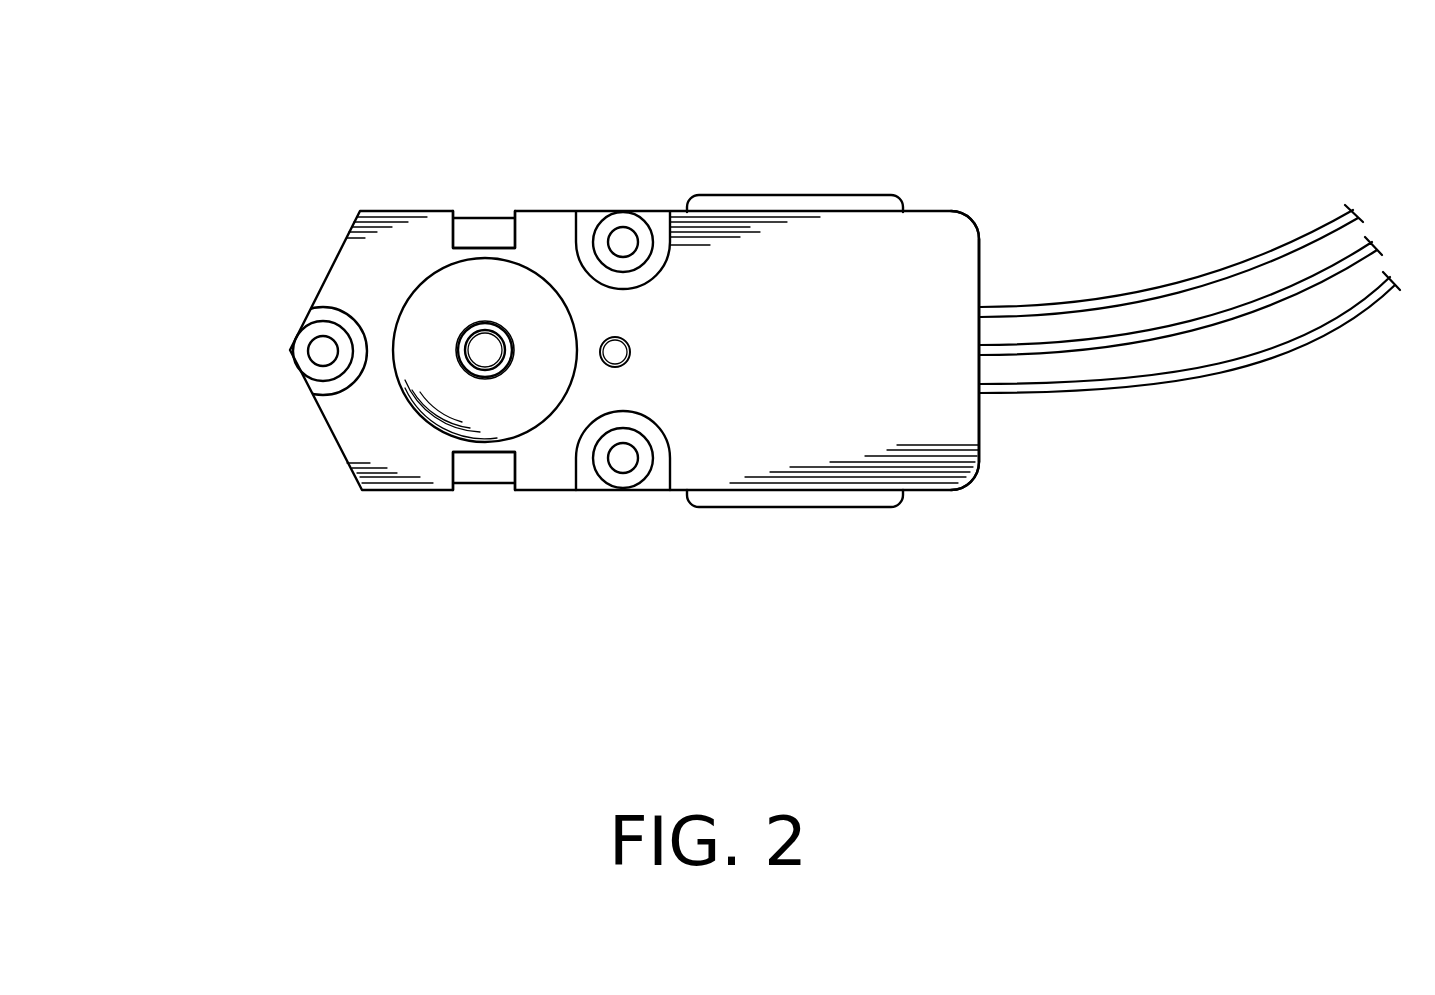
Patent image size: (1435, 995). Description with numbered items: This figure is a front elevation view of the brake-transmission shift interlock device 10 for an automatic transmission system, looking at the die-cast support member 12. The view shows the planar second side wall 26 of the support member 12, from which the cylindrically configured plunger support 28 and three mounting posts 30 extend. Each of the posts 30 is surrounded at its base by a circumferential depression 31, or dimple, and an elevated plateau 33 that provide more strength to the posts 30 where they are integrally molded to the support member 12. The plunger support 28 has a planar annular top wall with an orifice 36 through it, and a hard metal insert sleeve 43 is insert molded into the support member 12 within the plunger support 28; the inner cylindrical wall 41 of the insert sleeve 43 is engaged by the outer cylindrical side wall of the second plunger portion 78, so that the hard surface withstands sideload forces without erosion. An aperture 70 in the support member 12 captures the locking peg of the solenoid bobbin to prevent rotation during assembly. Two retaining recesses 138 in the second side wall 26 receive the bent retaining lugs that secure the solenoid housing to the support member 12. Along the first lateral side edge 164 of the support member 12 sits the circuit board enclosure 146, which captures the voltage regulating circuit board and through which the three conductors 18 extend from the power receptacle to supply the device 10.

The brake-transmission shift interlock device 10 is at (367, 187).
The support member 12 is at (980, 440).
The conductors 18 is at (1253, 310).
The second side wall 26 is at (968, 232).
The plunger support 28 is at (437, 308).
The mounting posts 30 is at (622, 240).
The circumferential depression 31 is at (650, 220).
The elevated plateau 33 is at (590, 224).
The orifice 36 is at (507, 355).
The inner cylindrical wall 41 is at (510, 318).
The insert sleeve 43 is at (462, 337).
The aperture 70 is at (617, 352).
The second plunger portion 78 is at (486, 353).
The retaining recesses 138 is at (488, 228).
The circuit board enclosure 146 is at (788, 203).
The first lateral side edge 164 is at (980, 275).